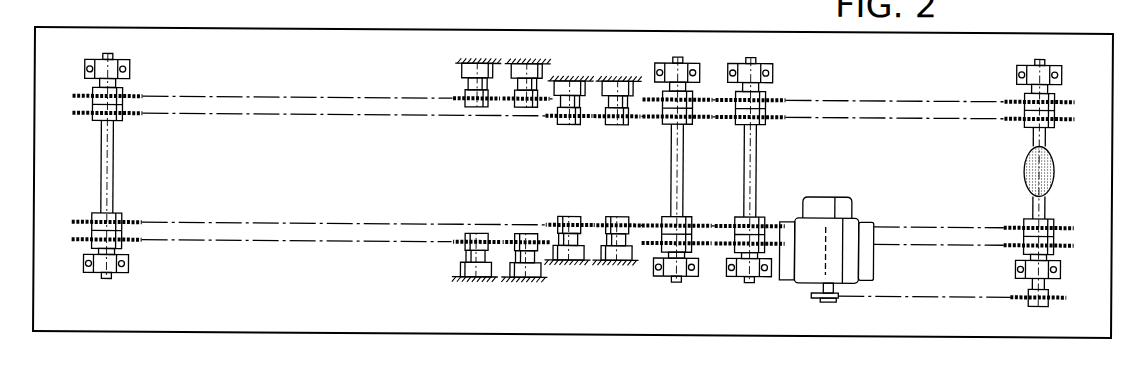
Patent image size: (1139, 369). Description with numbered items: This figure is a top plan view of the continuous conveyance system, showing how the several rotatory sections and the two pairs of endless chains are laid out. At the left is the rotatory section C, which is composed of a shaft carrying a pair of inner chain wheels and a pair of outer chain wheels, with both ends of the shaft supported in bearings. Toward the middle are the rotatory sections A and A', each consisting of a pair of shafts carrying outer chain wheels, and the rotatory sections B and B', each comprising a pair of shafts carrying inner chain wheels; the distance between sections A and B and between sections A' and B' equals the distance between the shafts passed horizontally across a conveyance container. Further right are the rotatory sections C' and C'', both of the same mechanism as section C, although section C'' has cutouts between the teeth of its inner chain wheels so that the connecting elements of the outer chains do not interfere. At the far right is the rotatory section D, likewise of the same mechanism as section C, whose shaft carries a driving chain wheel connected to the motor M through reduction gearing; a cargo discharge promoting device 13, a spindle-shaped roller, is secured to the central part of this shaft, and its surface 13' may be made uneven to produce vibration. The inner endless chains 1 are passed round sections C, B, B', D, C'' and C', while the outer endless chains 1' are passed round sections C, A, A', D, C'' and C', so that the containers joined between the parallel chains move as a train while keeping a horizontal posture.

The inner endless chain 1 is at (573, 170).
The outer endless chain 1' is at (572, 172).
The rotatory section A is at (470, 157).
The rotatory section A' is at (532, 158).
The rotatory section B is at (568, 151).
The rotatory section B' is at (616, 152).
The rotatory section C is at (107, 165).
The rotatory section C' is at (678, 169).
The rotatory section C'' is at (752, 169).
The motor M is at (834, 208).
The rotatory section D is at (1033, 183).
The cargo discharge promoting device 13 is at (1059, 171).
The surface 13' is at (1033, 172).